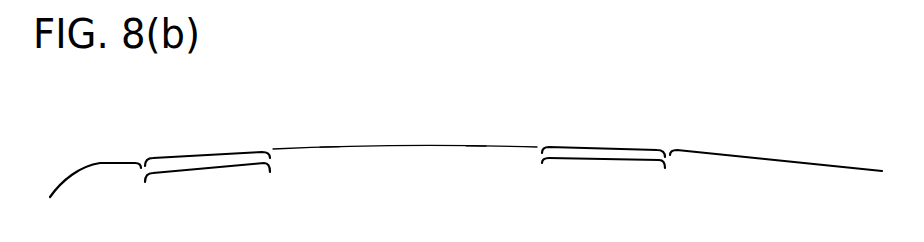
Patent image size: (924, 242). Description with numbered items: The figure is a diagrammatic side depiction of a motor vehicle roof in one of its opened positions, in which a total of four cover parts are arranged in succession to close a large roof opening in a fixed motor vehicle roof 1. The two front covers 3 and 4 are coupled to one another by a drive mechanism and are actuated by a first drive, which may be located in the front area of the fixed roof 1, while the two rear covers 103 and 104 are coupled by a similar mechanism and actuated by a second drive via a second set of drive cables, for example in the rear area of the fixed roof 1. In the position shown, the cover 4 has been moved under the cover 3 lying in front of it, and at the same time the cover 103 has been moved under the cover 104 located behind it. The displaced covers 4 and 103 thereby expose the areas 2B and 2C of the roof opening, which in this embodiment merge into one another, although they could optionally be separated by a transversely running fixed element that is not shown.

The fixed motor vehicle roof 1 is at (98, 162).
The front cover 3 is at (205, 156).
The front cover 4 is at (207, 171).
The roof opening area 2B is at (330, 147).
The roof opening area 2C is at (477, 147).
The rear cover 104 is at (613, 147).
The rear cover 103 is at (613, 160).